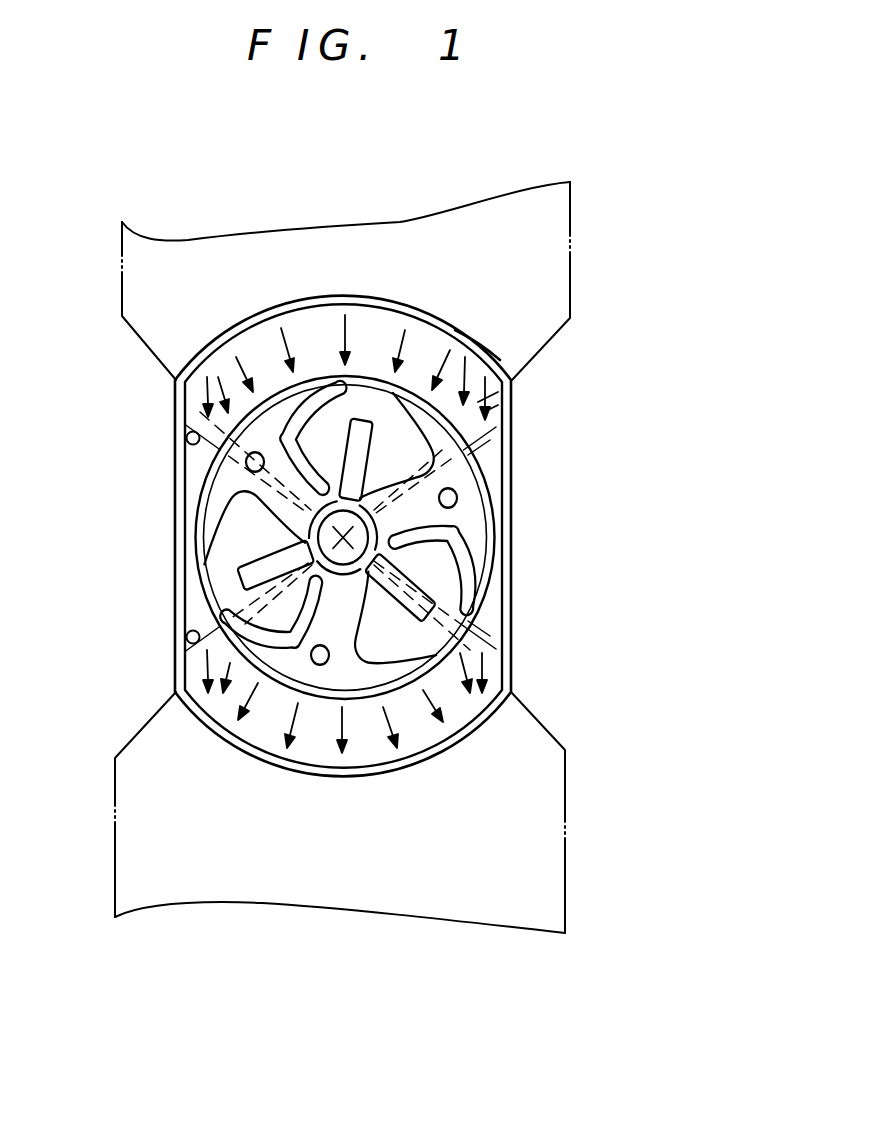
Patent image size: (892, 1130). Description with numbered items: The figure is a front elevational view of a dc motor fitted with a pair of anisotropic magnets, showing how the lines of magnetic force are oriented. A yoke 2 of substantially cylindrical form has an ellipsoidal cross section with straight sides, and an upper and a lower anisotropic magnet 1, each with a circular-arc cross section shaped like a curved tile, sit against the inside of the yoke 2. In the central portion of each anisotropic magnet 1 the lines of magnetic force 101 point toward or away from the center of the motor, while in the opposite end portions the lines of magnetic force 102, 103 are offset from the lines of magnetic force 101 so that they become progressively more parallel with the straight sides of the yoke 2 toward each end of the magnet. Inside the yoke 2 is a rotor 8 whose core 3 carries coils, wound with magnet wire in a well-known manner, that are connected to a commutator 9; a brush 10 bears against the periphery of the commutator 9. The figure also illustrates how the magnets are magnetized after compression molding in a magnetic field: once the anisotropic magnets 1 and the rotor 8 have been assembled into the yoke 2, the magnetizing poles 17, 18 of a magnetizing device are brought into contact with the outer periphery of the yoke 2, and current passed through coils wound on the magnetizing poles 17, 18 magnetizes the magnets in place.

The anisotropic magnet 1 is at (426, 326).
The yoke 2 is at (508, 505).
The core 3 is at (473, 563).
The rotor 8 is at (502, 593).
The commutator 9 is at (316, 528).
The brush 10 is at (233, 580).
The magnetizing pole 17 is at (575, 253).
The magnetizing pole 18 is at (565, 890).
The lines of magnetic force 101 is at (343, 328).
The lines of magnetic force 102 is at (478, 344).
The lines of magnetic force 103 is at (483, 397).